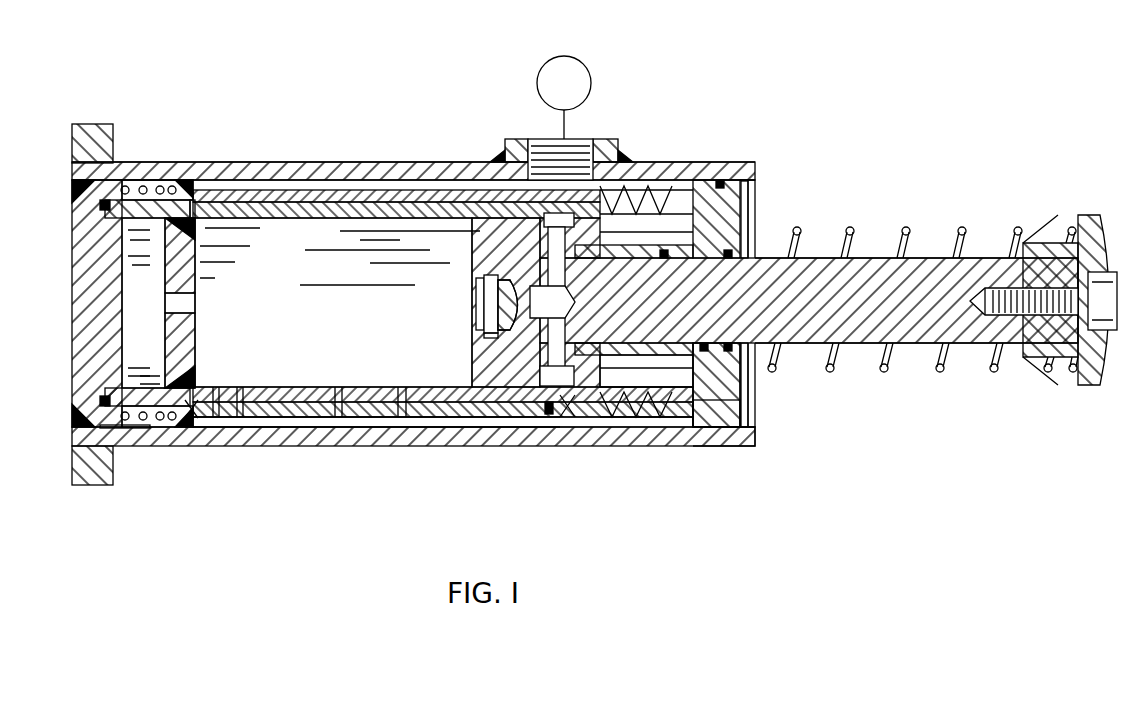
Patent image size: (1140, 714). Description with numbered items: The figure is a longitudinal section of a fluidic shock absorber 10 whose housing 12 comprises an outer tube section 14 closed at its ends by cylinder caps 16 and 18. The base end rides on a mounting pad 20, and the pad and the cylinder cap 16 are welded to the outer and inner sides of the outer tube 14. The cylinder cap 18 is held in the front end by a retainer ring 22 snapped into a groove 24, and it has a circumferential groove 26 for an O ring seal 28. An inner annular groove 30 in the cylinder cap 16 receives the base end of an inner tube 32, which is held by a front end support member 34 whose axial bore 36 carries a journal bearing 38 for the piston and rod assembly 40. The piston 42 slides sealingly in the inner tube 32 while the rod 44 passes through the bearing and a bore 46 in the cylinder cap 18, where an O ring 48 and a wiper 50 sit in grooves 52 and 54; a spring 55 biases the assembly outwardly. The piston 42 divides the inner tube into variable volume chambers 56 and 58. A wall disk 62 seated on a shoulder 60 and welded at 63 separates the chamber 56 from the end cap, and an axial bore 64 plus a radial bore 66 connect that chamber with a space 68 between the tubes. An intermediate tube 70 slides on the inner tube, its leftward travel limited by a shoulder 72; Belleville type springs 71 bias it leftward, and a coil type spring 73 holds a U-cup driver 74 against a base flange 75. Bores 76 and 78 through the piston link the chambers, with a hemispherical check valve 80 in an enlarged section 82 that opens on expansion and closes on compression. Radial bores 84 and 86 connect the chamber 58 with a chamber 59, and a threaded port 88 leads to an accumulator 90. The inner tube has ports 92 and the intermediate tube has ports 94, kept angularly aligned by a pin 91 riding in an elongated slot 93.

The fluidic shock absorber 10 is at (62, 155).
The housing 12 is at (757, 167).
The outer tube section 14 is at (358, 162).
The cylinder cap 16 is at (72, 350).
The cylinder cap 18 is at (740, 405).
The mounting pad 20 is at (93, 124).
The retainer ring 22 is at (748, 195).
The groove 24 is at (751, 420).
The circumferential groove 26 is at (748, 446).
The O ring seal 28 is at (723, 178).
The inner annular groove 30 is at (105, 215).
The inner tube 32 is at (324, 220).
The front end support member 34 is at (700, 185).
The axial bore 36 is at (640, 370).
The journal bearing 38 is at (634, 365).
The piston and rod assembly 40 is at (790, 256).
The piston 42 is at (506, 302).
The rod 44 is at (809, 300).
The bore 46 is at (716, 385).
The O ring 48 is at (704, 346).
The wiper 50 is at (728, 345).
The groove 52 is at (669, 258).
The groove 54 is at (732, 258).
The spring 55 is at (938, 372).
The variable volume chamber 56 is at (337, 302).
The variable volume chamber 58 is at (557, 374).
The chamber 59 is at (285, 193).
The shoulder 60 is at (186, 228).
The wall disk 62 is at (197, 266).
The weld 63 is at (158, 385).
The axial bore 64 is at (190, 311).
The radial bore 66 is at (128, 387).
The space 68 is at (145, 185).
The intermediate tube 70 is at (484, 428).
The Belleville type springs 71 is at (633, 432).
The shoulder 72 is at (190, 420).
The coil type spring 73 is at (122, 446).
The U-cup driver 74 is at (162, 428).
The base flange 75 is at (208, 190).
The bore 76 is at (552, 302).
The bore 78 is at (558, 268).
The hemispherical check valve 80 is at (482, 300).
The enlarged section 82 is at (500, 333).
The radial bore 84 is at (634, 241).
The radial bore 86 is at (558, 228).
The threaded port 88 is at (585, 139).
The accumulator 90 is at (570, 83).
The pin 91 is at (548, 420).
The ports 92 is at (291, 386).
The elongated slot 93 is at (598, 432).
The ports 94 is at (292, 428).